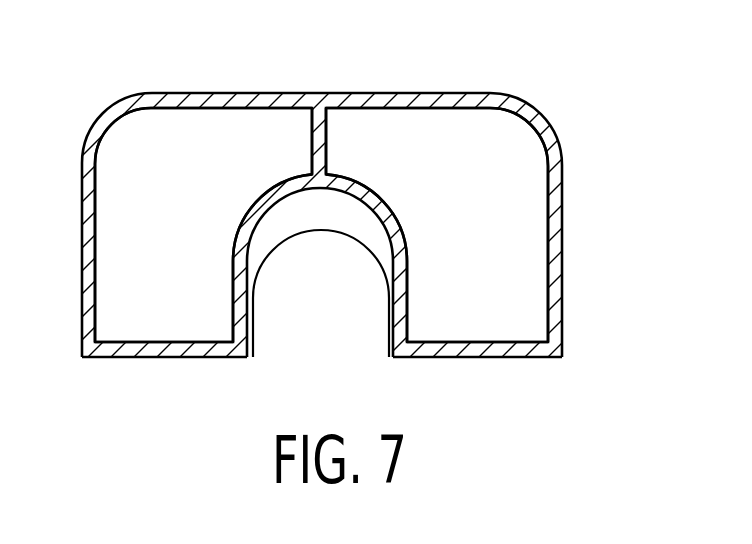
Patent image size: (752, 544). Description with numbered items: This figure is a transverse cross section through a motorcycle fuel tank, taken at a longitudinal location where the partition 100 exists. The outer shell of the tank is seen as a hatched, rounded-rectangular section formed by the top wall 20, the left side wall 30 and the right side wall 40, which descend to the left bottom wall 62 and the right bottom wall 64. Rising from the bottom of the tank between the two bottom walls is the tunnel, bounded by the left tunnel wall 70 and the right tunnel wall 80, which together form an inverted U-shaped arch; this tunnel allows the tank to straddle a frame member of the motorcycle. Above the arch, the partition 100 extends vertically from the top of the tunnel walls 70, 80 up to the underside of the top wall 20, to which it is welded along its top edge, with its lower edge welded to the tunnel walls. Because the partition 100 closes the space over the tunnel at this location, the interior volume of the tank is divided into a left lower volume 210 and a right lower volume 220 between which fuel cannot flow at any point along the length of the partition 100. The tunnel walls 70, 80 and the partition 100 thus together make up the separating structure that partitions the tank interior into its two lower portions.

The top wall 20 is at (362, 92).
The left side wall 30 is at (563, 237).
The right side wall 40 is at (82, 233).
The left bottom wall 62 is at (517, 358).
The right bottom wall 64 is at (165, 358).
The left tunnel wall 70 is at (410, 270).
The right tunnel wall 80 is at (233, 315).
The partition 100 is at (332, 133).
The left lower volume 210 is at (505, 207).
The right lower volume 220 is at (198, 208).